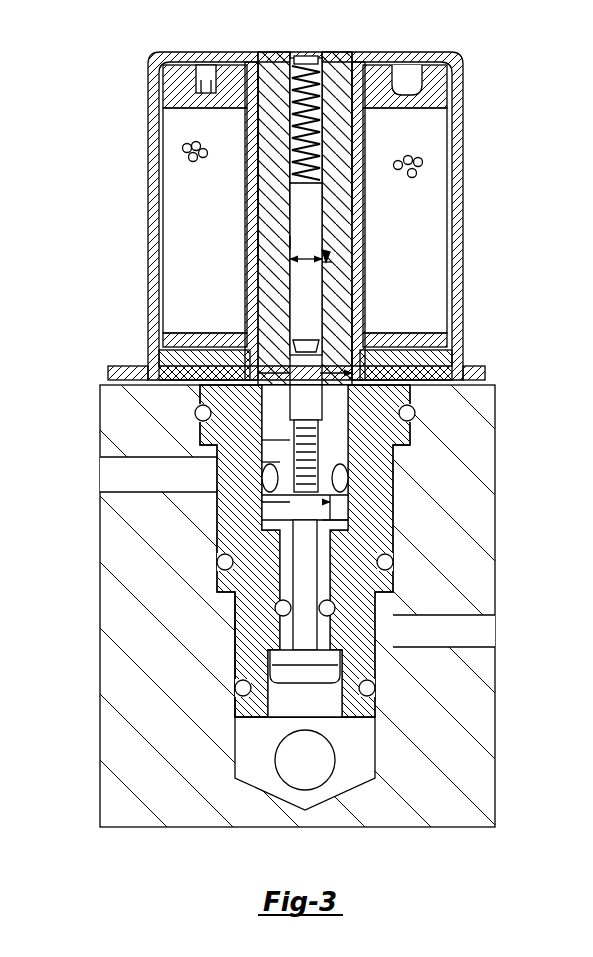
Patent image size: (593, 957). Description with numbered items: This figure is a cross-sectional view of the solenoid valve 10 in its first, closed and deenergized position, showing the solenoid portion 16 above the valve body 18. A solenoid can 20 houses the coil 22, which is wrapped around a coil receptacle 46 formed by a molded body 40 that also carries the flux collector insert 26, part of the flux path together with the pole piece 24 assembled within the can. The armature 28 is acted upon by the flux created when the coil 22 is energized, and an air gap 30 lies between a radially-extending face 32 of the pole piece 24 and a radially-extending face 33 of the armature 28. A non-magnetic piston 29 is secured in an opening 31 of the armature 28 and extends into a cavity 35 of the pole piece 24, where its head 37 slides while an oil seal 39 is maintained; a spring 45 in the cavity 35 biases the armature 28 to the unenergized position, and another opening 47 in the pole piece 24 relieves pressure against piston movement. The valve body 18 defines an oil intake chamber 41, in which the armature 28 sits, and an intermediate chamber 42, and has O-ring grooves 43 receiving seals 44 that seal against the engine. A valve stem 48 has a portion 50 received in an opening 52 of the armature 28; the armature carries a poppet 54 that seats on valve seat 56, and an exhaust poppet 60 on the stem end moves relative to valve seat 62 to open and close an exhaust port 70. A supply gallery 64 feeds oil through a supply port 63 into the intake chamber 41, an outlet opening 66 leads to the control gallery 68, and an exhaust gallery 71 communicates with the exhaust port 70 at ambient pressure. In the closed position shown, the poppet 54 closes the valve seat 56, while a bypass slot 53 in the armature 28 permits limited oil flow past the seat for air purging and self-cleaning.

The solenoid valve 10 is at (60, 110).
The solenoid portion 16 is at (148, 258).
The valve body 18 is at (384, 464).
The solenoid can 20 is at (465, 190).
The coil 22 is at (185, 150).
The pole piece 24 is at (246, 136).
The flux collector insert 26 is at (462, 362).
The armature 28 is at (272, 306).
The piston 29 is at (356, 206).
The air gap 30 is at (348, 255).
The opening 31 is at (307, 293).
The radially-extending face 32 is at (343, 260).
The radially-extending face 33 is at (280, 256).
The cavity 35 is at (298, 243).
The head 37 is at (280, 206).
The oil seal 39 is at (323, 216).
The body 40 is at (368, 320).
The oil intake chamber 41 is at (262, 451).
The intermediate chamber 42 is at (326, 586).
The O-ring grooves 43 is at (413, 412).
The seals 44 is at (197, 412).
The spring 45 is at (362, 125).
The coil receptacle 46 is at (258, 240).
The opening 47 is at (305, 52).
The valve stem 48 is at (278, 518).
The portion 50 is at (312, 474).
The opening 52 is at (300, 440).
The bypass slot 53 is at (332, 506).
The poppet 54 is at (340, 498).
The valve seat 56 is at (266, 495).
The exhaust poppet 60 is at (283, 660).
The valve seat 62 is at (338, 656).
The supply port 63 is at (270, 468).
The supply gallery 64 is at (106, 478).
The outlet opening 66 is at (283, 604).
The control gallery 68 is at (490, 637).
The exhaust port 70 is at (313, 713).
The exhaust gallery 71 is at (310, 767).